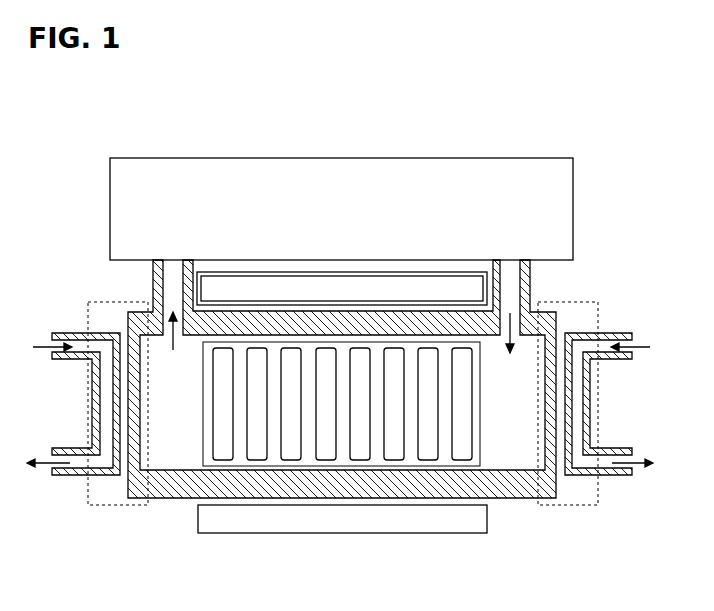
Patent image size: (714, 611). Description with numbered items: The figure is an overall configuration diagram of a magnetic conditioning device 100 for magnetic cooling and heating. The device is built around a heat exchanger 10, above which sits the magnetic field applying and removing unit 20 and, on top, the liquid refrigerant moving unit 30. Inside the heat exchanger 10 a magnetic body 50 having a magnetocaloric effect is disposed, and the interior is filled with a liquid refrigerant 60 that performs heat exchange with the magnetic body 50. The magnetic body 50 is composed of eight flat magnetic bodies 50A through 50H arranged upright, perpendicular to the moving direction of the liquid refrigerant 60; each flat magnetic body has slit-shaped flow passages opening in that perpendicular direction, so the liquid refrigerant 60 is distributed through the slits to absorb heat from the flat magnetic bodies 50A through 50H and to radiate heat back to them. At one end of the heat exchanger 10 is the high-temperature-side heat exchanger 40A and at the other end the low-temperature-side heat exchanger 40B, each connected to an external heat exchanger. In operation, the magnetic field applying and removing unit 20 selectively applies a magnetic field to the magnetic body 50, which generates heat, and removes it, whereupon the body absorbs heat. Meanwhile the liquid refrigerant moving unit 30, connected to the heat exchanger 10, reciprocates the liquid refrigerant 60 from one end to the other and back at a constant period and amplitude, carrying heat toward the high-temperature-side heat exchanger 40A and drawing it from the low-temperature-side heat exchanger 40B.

The magnetic conditioning device 100 is at (64, 104).
The heat exchanger 10 is at (167, 500).
The magnetic field applying and removing unit 20 is at (428, 283).
The liquid refrigerant moving unit 30 is at (535, 160).
The high-temperature-side heat exchanger 40A is at (112, 503).
The low-temperature-side heat exchanger 40B is at (578, 505).
The magnetic body 50 is at (407, 466).
The flat magnetic body 50A is at (218, 462).
The flat magnetic body 50H is at (463, 462).
The liquid refrigerant 60 is at (538, 503).